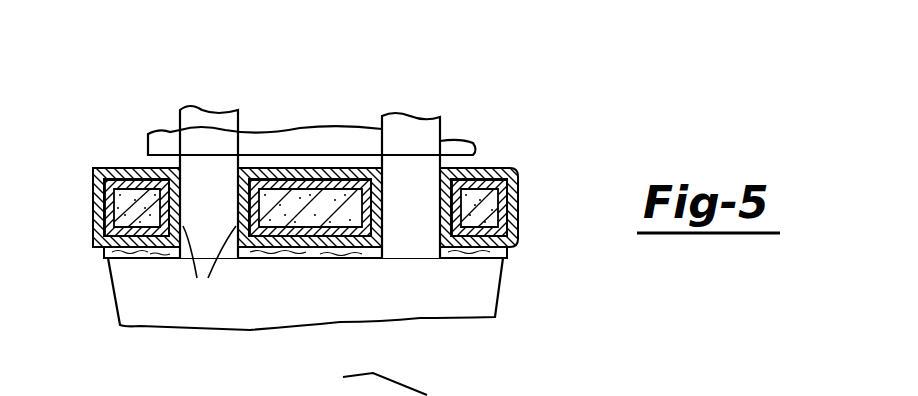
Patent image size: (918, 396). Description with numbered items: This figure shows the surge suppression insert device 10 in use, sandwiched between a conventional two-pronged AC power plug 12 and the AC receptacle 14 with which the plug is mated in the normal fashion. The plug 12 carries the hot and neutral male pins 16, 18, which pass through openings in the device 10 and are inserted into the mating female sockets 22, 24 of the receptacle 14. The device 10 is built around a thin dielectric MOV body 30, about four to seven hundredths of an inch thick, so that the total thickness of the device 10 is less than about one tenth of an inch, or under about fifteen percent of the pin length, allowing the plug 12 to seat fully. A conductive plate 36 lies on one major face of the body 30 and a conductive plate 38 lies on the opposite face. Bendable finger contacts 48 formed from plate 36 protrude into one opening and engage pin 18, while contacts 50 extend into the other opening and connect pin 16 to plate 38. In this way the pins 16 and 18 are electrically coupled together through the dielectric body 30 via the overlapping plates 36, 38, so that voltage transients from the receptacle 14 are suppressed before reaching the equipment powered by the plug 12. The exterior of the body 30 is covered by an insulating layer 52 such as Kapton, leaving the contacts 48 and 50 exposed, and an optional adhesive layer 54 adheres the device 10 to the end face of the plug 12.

The surge suppression insert device 10 is at (550, 120).
The AC power plug 12 is at (387, 287).
The AC receptacle 14 is at (468, 130).
The hot conductive pin 16 is at (222, 164).
The neutral conductive pin 18 is at (424, 172).
The female socket 22 is at (200, 117).
The female socket 24 is at (440, 127).
The MOV body 30 is at (520, 194).
The conductive plate 36 is at (303, 256).
The conductive plate 38 is at (320, 175).
The finger contacts 48 is at (209, 266).
The contacts 50 is at (382, 180).
The insulating layer 52 is at (95, 205).
The adhesive layer 54 is at (510, 251).